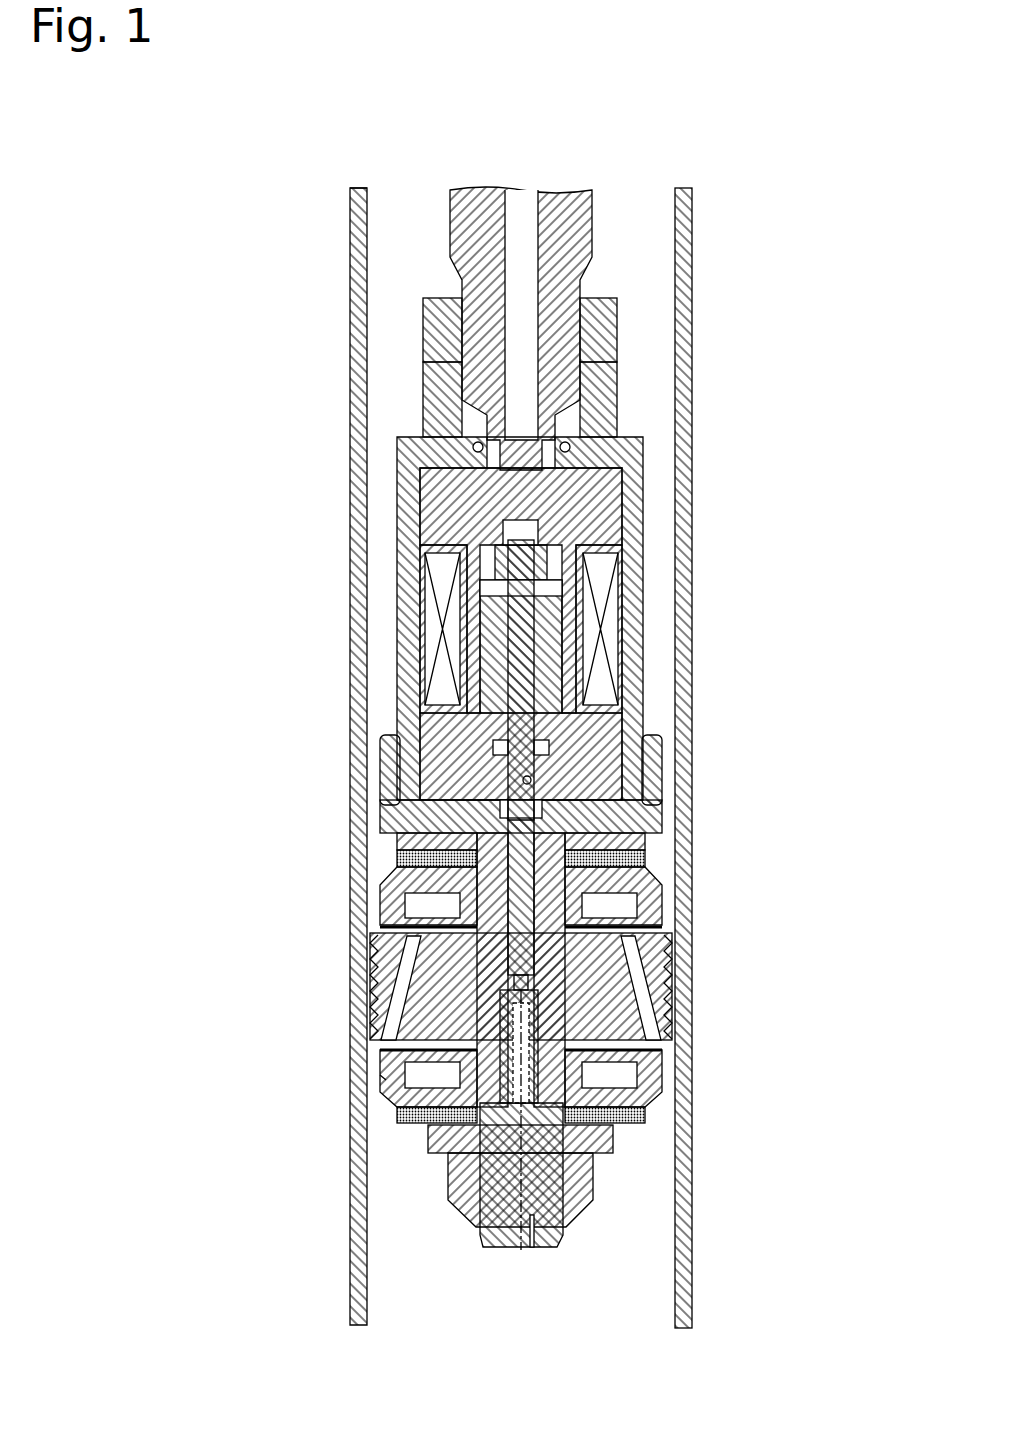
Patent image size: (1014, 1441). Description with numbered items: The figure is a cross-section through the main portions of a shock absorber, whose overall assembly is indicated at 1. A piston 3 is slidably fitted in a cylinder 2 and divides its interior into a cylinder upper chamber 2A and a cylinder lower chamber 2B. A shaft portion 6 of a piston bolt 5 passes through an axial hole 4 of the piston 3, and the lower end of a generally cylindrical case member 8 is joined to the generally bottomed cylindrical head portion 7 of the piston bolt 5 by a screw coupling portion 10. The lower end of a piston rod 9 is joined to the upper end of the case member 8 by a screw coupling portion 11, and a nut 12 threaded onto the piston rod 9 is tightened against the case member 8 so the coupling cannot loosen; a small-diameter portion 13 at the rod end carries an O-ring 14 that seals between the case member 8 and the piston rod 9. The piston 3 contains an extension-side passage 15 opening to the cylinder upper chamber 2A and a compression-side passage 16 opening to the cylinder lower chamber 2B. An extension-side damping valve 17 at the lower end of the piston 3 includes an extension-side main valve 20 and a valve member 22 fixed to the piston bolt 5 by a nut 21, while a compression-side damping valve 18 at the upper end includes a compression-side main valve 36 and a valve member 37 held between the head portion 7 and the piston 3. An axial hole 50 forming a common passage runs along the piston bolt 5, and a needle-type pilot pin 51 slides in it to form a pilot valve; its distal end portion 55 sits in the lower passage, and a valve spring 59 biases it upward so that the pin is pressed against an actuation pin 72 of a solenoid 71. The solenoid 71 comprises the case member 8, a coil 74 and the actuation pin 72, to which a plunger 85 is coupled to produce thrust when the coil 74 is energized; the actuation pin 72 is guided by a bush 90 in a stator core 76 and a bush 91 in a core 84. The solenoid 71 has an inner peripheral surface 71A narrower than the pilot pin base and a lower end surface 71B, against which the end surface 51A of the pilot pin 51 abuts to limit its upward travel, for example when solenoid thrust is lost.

The fuel injection device 1 is at (760, 166).
The cylinder 2 is at (686, 245).
The cylinder upper chamber 2A is at (387, 672).
The cylinder lower chamber 2B is at (400, 1225).
The piston 3 is at (405, 955).
The axial hole 4 is at (605, 985).
The piston bolt 5 is at (540, 1254).
The shaft portion 6 is at (527, 1250).
The head portion 7 is at (660, 790).
The case member 8 is at (632, 482).
The piston rod 9 is at (446, 238).
The screw coupling portion 10 is at (655, 750).
The screw coupling portion 11 is at (425, 385).
The nut 12 is at (425, 334).
The small-diameter portion 13 is at (440, 430).
The O-ring 14 is at (572, 450).
The extension-side passage 15 is at (672, 962).
The compression-side passage 16 is at (517, 1012).
The extension-side damping valve 17 is at (384, 1105).
The compression-side damping valve 18 is at (378, 866).
The extension-side main valve 20 is at (650, 1060).
The nut 21 is at (463, 1192).
The valve member 22 is at (635, 1095).
The compression-side main valve 36 is at (655, 925).
The valve member 37 is at (660, 900).
The axial hole 50 is at (560, 1015).
The pilot pin 51 is at (515, 962).
The end surface 51A is at (400, 840).
The distal end portion 55 is at (386, 1078).
The valve spring 59 is at (490, 1252).
The solenoid 71 is at (500, 621).
The inner peripheral surface 71A is at (535, 788).
The lower end surface 71B is at (503, 812).
The actuation pin 72 is at (520, 772).
The coil 74 is at (600, 622).
The stator core 76 is at (445, 500).
The core 84 is at (460, 752).
The plunger 85 is at (445, 625).
The bush 90 is at (540, 598).
The bush 91 is at (540, 735).